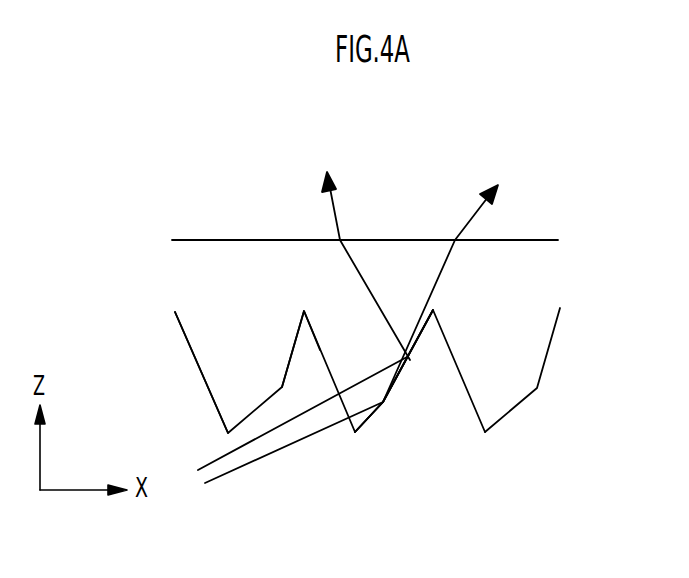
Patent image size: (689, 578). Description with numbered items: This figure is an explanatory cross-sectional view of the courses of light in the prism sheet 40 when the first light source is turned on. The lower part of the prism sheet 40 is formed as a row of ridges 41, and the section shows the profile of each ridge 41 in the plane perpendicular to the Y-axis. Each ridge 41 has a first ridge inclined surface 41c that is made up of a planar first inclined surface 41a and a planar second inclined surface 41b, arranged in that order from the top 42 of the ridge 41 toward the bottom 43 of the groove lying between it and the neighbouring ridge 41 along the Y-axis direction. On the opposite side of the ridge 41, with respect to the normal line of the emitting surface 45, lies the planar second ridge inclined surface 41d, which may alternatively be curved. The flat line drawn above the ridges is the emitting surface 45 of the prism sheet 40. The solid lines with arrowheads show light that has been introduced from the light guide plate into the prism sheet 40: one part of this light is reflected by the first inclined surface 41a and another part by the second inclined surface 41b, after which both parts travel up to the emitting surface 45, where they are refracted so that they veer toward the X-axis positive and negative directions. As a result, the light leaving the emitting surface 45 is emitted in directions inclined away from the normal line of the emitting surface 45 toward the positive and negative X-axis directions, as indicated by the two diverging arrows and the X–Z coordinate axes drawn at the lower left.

The prism sheet 40 is at (542, 277).
The ridge 41 is at (203, 348).
The first inclined surface 41a is at (390, 407).
The second inclined surface 41b is at (420, 335).
The first ridge inclined surface 41c is at (477, 490).
The second ridge inclined surface 41d is at (205, 388).
The top 42 is at (352, 433).
The bottom 43 is at (305, 315).
The emitting surface 45 is at (229, 240).